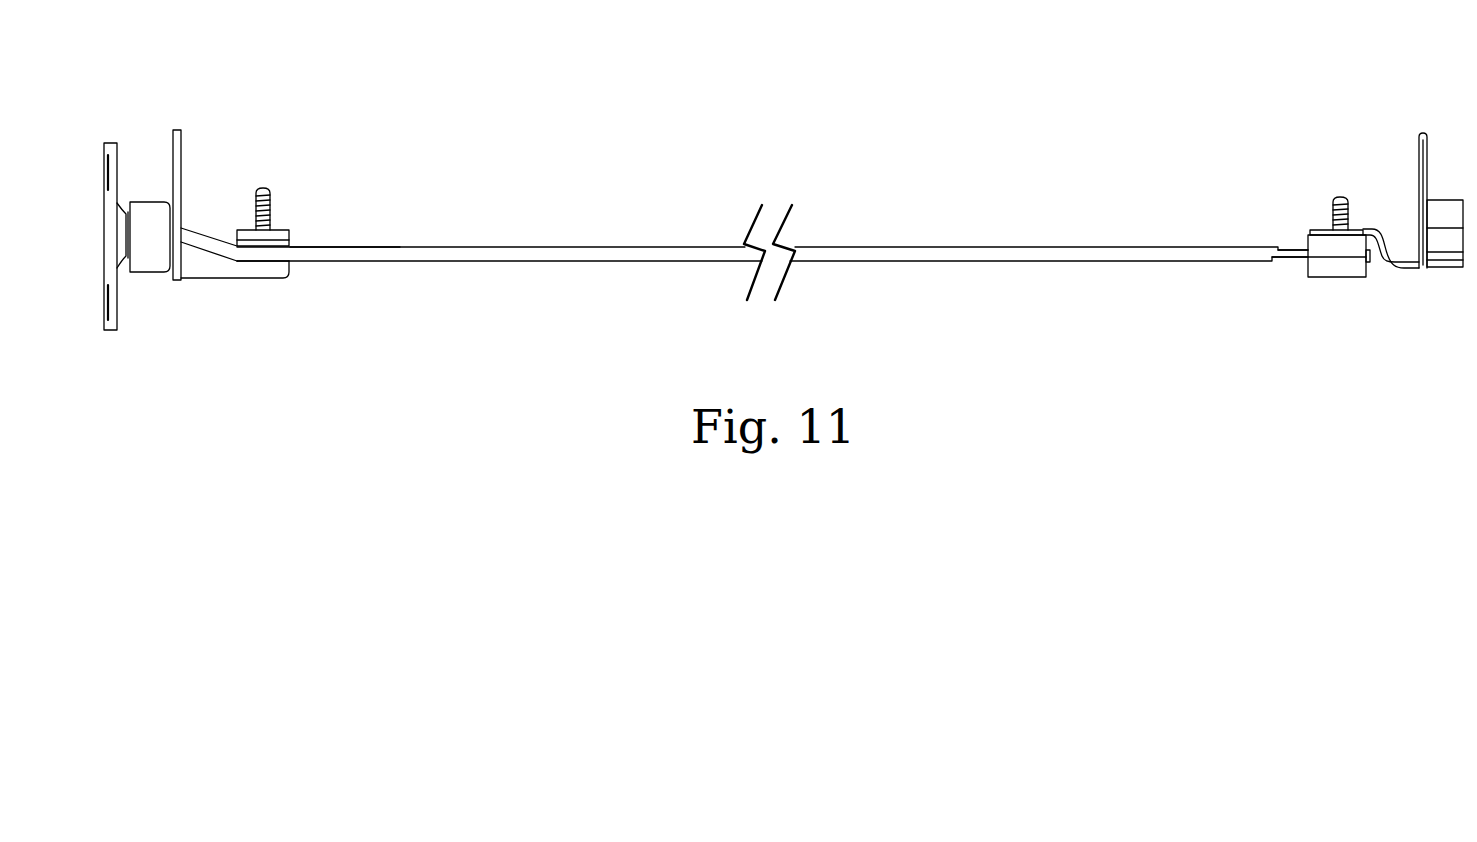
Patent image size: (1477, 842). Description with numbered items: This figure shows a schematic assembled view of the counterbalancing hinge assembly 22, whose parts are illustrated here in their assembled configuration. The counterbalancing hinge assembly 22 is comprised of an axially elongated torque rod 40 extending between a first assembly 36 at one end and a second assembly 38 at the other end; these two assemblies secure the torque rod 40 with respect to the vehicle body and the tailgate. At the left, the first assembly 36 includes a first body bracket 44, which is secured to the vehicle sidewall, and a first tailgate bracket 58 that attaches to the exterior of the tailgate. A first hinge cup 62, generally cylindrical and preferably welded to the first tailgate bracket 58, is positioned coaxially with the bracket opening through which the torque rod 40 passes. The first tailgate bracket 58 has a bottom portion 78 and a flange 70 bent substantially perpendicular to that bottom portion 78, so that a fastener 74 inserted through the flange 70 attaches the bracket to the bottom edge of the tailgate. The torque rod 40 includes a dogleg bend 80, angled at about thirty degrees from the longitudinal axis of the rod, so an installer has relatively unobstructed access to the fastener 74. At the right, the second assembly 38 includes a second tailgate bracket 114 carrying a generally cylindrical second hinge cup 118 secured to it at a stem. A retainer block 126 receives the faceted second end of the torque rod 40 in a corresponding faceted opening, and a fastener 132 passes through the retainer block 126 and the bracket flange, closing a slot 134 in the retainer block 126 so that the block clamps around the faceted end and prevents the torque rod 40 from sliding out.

The counterbalancing hinge assembly 22 is at (612, 322).
The first assembly 36 is at (243, 153).
The second assembly 38 is at (1288, 152).
The torque rod 40 is at (371, 255).
The first body bracket 44 is at (116, 322).
The first tailgate bracket 58 is at (183, 140).
The first hinge cup 62 is at (156, 200).
The flange 70 is at (290, 240).
The fastener 74 is at (270, 206).
The bottom portion 78 is at (200, 275).
The bend 80 is at (237, 258).
The second tailgate bracket 114 is at (1419, 136).
The second hinge cup 118 is at (1447, 262).
The retainer block 126 is at (1312, 275).
The fastener 132 is at (1333, 205).
The slot 134 is at (1262, 262).